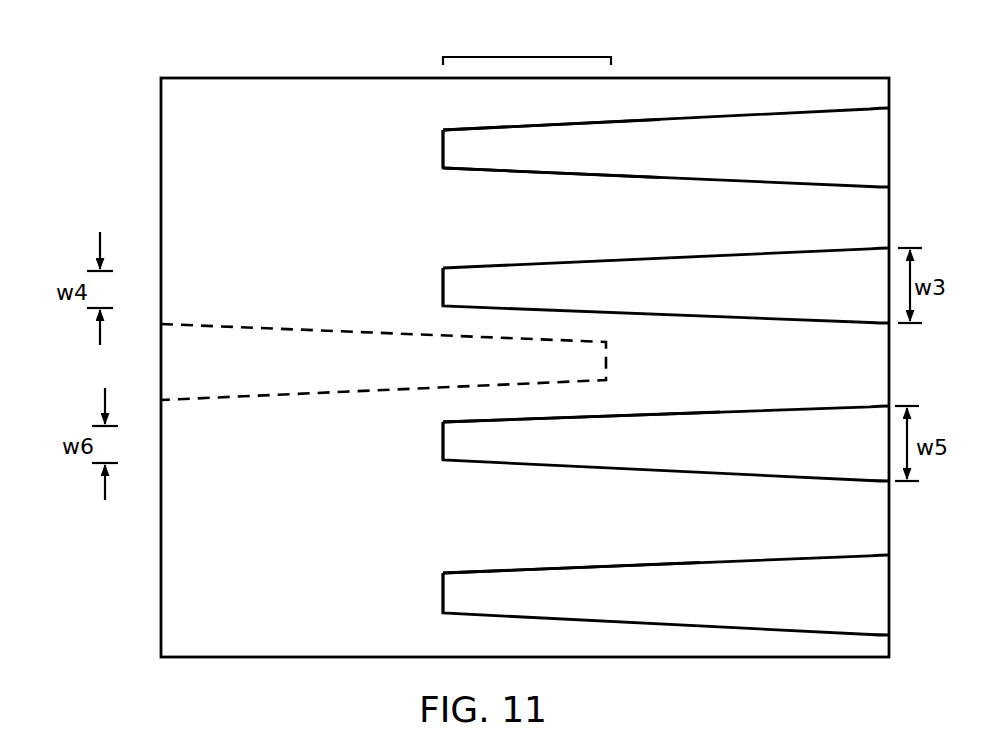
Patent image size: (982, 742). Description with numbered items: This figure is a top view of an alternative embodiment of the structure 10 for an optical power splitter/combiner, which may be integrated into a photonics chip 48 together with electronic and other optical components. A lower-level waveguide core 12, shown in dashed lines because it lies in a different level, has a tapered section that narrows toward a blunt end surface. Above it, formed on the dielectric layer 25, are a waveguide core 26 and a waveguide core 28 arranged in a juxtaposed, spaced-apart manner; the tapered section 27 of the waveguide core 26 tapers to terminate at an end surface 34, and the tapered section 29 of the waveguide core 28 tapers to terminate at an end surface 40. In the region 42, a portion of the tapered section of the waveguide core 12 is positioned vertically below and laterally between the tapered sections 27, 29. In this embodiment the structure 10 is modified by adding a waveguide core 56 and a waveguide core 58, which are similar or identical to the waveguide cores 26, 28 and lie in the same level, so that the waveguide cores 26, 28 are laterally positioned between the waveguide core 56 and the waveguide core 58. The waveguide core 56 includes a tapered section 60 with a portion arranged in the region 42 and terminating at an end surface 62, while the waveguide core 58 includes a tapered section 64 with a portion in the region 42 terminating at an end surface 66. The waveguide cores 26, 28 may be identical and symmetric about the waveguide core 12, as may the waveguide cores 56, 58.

The structure 10 is at (299, 154).
The waveguide core 12 is at (287, 318).
The dielectric layer 25 is at (245, 610).
The waveguide core 26 is at (631, 252).
The tapered section 27 is at (693, 293).
The waveguide core 28 is at (591, 473).
The tapered section 29 is at (718, 445).
The end surface 34 is at (443, 292).
The end surface 40 is at (443, 440).
The region 42 is at (527, 57).
The photonics chip 48 is at (126, 102).
The waveguide core 56 is at (513, 180).
The waveguide core 58 is at (692, 550).
The tapered section 60 is at (556, 147).
The end surface 62 is at (443, 150).
The tapered section 64 is at (508, 594).
The end surface 66 is at (443, 597).